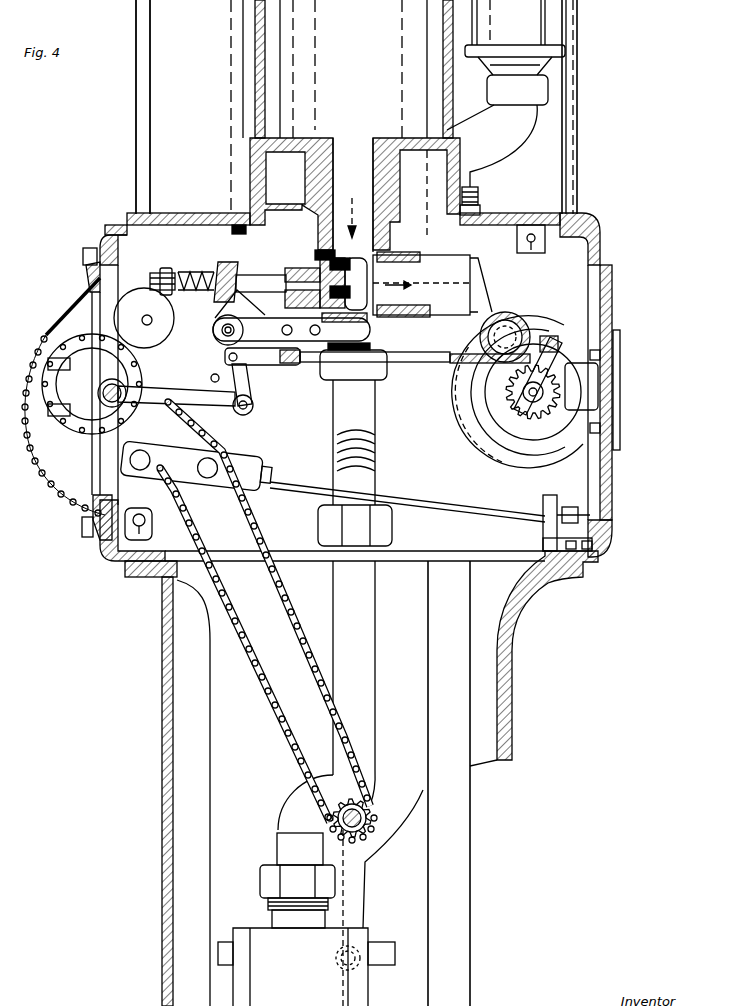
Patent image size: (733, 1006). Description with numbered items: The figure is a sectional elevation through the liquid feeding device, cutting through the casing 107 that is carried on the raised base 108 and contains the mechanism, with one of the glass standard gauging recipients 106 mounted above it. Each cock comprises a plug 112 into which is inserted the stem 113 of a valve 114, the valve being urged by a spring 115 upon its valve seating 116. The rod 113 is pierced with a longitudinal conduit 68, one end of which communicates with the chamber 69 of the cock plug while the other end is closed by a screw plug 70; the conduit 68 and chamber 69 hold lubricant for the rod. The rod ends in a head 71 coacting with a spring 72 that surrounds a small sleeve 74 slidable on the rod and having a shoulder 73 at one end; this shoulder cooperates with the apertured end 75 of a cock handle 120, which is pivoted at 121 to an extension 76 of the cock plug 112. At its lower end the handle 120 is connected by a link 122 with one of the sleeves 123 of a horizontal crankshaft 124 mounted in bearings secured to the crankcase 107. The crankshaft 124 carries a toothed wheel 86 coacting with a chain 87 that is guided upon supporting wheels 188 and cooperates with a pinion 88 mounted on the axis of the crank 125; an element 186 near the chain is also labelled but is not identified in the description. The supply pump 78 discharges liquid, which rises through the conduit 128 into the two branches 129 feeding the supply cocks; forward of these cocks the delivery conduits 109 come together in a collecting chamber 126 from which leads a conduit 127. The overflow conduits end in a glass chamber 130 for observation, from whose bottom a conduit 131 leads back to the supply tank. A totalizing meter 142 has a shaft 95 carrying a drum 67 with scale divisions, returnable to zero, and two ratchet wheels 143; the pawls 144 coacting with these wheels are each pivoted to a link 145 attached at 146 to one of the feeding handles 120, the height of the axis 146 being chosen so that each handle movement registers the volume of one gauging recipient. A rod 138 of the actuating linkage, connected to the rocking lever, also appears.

The glass chamber 130 is at (542, 31).
The standard gauging recipient 106 is at (320, 105).
The delivery conduit 109 is at (337, 165).
The rod 138 is at (236, 262).
The cock plug 112 is at (316, 250).
The spring 115 is at (366, 253).
The casing 107 is at (586, 226).
The screw plug 70 is at (156, 276).
The head 71 is at (166, 276).
The spring 72 is at (187, 288).
The apertured end 75 is at (230, 274).
The valve stem 113 is at (262, 274).
The longitudinal conduit 68 is at (267, 260).
The chamber 69 is at (289, 260).
The valve seating 116 is at (380, 275).
The valve 114 is at (385, 339).
The collecting chamber 126 is at (482, 315).
The conduit 127 is at (507, 332).
The pawl 144 is at (545, 340).
The ratchet wheel 143 is at (522, 405).
The shaft 95 is at (550, 462).
The totalizing meter 142 is at (598, 450).
The small sleeve 74 is at (185, 290).
The shoulder 73 is at (220, 278).
The pivot 121 is at (222, 334).
The sleeve 123 is at (212, 378).
The axis 146 is at (230, 361).
The extension 76 is at (257, 336).
The cock handle 120 is at (248, 388).
The horizontal crankshaft 124 is at (58, 400).
The link 122 is at (185, 402).
The toothed wheel 86 is at (82, 420).
The clamp 186 is at (118, 450).
The supporting wheel 188 is at (208, 524).
The drum 67 is at (559, 496).
The link 145 is at (380, 366).
The branch 129 is at (377, 448).
The conduit 128 is at (376, 668).
The chain 87 is at (250, 645).
The conduit 131 is at (457, 827).
The raised base 108 is at (512, 668).
The pinion 88 is at (366, 803).
The crank 125 is at (358, 912).
The supply pump 78 is at (282, 942).